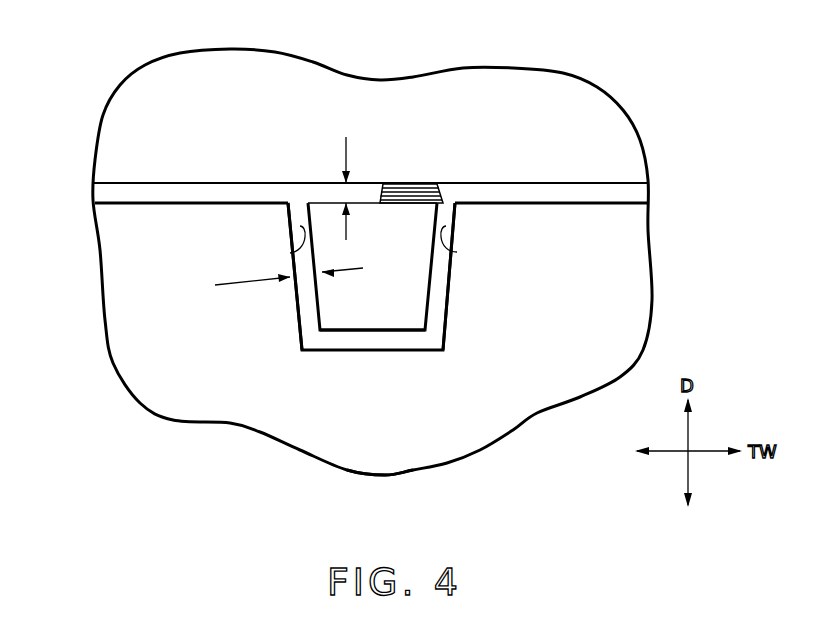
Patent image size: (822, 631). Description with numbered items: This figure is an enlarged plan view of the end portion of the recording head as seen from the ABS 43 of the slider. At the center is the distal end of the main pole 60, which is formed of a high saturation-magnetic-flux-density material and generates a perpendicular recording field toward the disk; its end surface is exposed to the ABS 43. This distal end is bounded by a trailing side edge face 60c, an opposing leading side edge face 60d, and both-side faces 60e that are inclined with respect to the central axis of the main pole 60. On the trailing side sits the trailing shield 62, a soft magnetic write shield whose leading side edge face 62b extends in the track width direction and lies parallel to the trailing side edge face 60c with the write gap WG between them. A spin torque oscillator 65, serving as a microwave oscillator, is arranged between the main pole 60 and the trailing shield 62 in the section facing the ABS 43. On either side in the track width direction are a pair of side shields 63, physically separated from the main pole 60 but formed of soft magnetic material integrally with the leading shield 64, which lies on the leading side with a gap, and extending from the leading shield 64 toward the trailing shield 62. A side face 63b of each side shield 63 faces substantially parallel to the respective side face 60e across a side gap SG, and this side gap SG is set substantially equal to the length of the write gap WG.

The ABS 43 is at (185, 393).
The main pole 60 is at (373, 297).
The trailing side edge face 60c is at (322, 200).
The leading side edge face 60d is at (387, 330).
The both-side faces 60e is at (313, 307).
The trailing shield 62 is at (503, 80).
The leading side edge face 62b is at (507, 184).
The side shields 63 is at (114, 272).
The side face 63b is at (290, 253).
The leading shield 64 is at (390, 457).
The spin torque oscillator 65 is at (407, 183).
The write gap WG is at (363, 188).
The side gap SG is at (288, 273).